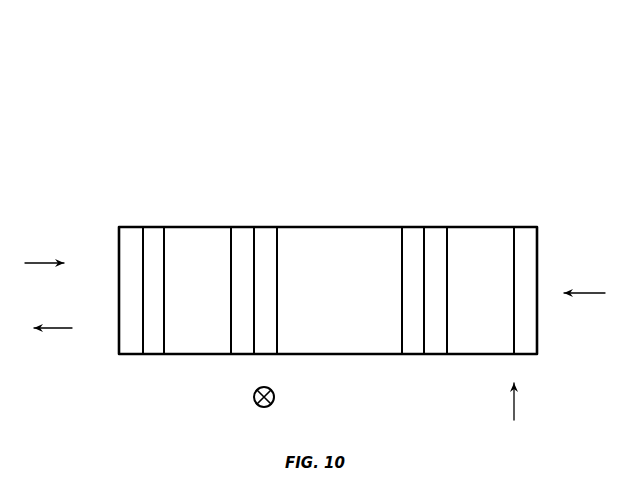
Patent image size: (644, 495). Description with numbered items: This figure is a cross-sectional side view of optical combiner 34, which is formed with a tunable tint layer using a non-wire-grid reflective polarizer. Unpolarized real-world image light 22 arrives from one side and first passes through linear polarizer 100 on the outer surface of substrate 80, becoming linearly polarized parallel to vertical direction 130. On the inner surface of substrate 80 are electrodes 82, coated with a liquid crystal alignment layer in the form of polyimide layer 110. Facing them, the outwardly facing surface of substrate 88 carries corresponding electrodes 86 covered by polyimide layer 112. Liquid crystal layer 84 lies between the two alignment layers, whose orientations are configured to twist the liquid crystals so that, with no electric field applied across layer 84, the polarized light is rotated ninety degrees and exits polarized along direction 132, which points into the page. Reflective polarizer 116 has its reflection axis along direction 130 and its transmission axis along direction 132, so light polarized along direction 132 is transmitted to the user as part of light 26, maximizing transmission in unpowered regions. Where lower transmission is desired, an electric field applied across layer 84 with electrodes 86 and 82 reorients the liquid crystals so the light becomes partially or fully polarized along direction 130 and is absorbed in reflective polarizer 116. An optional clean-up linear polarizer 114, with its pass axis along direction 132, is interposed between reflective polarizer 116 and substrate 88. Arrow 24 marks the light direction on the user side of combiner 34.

The optical combiner 34 is at (436, 82).
The reflective polarizer 116 is at (131, 232).
The linear polarizer 114 is at (155, 232).
The substrate 88 is at (203, 232).
The electrodes 86 is at (243, 232).
The polyimide layer 112 is at (268, 232).
The liquid crystal layer 84 is at (338, 232).
The polyimide layer 110 is at (413, 232).
The electrodes 82 is at (438, 232).
The substrate 80 is at (481, 232).
The linear polarizer 100 is at (527, 232).
The incident light direction 24 is at (45, 263).
The light 26 is at (55, 330).
The real-world image light 22 is at (582, 295).
The vertical direction 130 is at (510, 404).
The direction 132 is at (276, 396).